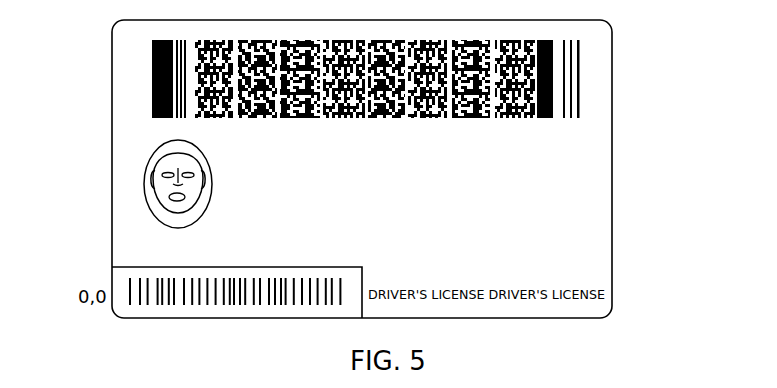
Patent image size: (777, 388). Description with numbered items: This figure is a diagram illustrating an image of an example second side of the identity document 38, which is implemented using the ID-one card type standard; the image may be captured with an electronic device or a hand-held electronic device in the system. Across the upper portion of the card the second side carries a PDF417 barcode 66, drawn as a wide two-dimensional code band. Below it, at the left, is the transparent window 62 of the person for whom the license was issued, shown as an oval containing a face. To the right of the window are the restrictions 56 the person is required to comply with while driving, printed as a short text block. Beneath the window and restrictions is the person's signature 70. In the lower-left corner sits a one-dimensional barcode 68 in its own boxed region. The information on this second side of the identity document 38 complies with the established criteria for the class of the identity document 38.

The identity document 38 is at (112, 33).
The PDF417 barcode 66 is at (580, 84).
The transparent window 62 is at (210, 168).
The restrictions 56 is at (422, 151).
The signature 70 is at (392, 232).
The one-dimensional barcode 68 is at (178, 295).